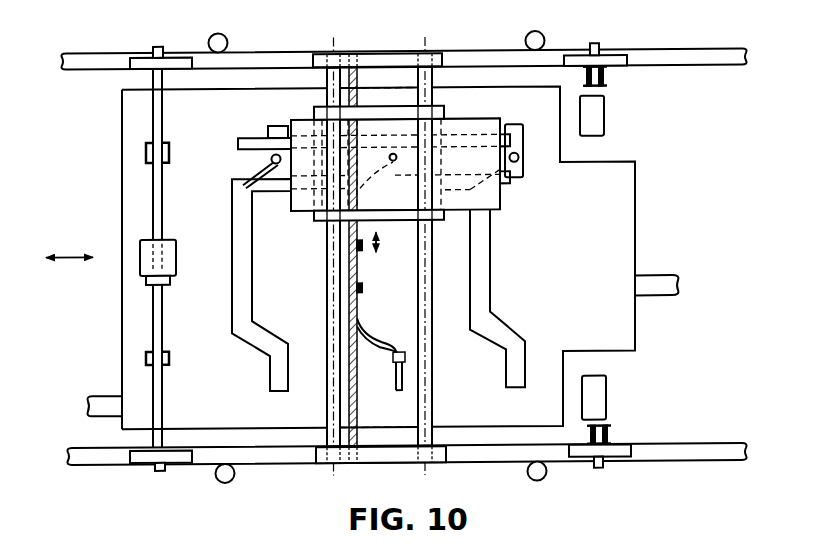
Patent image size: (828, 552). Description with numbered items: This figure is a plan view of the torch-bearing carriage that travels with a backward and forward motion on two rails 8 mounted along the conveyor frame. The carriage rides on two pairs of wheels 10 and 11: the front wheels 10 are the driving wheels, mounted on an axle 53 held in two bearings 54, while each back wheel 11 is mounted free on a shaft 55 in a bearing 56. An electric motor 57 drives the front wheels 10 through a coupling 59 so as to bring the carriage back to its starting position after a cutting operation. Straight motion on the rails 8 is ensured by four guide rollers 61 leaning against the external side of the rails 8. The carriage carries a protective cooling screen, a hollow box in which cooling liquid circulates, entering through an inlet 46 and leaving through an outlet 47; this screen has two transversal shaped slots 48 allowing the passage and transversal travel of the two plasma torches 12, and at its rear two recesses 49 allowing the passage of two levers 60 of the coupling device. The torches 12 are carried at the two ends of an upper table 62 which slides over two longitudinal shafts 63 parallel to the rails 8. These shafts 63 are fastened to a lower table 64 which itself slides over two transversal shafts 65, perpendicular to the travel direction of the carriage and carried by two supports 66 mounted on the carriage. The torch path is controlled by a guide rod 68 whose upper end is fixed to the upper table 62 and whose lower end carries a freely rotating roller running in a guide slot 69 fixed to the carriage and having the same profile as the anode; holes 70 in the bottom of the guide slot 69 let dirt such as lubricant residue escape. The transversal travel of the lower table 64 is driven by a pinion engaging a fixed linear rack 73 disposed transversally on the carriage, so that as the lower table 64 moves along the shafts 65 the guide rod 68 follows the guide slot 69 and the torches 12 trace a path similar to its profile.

The rails 8 is at (712, 58).
The wheels 10 is at (137, 53).
The wheels 11 is at (627, 52).
The plasma torches 12 is at (275, 170).
The inlet 46 is at (76, 403).
The outlet 47 is at (720, 287).
The transversal shaped slots 48 is at (280, 365).
The recesses 49 is at (627, 132).
The axle 53 is at (155, 204).
The bearings 54 is at (148, 153).
The shaft 55 is at (598, 44).
The bearing 56 is at (608, 80).
The electric motor 57 is at (147, 266).
The coupling 59 is at (147, 284).
The levers 60 is at (597, 108).
The guide rollers 61 is at (226, 35).
The upper table 62 is at (478, 125).
The longitudinal shafts 63 is at (237, 178).
The lower table 64 is at (373, 113).
The transversal shafts 65 is at (328, 278).
The supports 66 is at (441, 50).
The guide rod 68 is at (390, 157).
The guide slot 69 is at (388, 335).
The holes 70 is at (363, 292).
The linear rack 73 is at (359, 394).